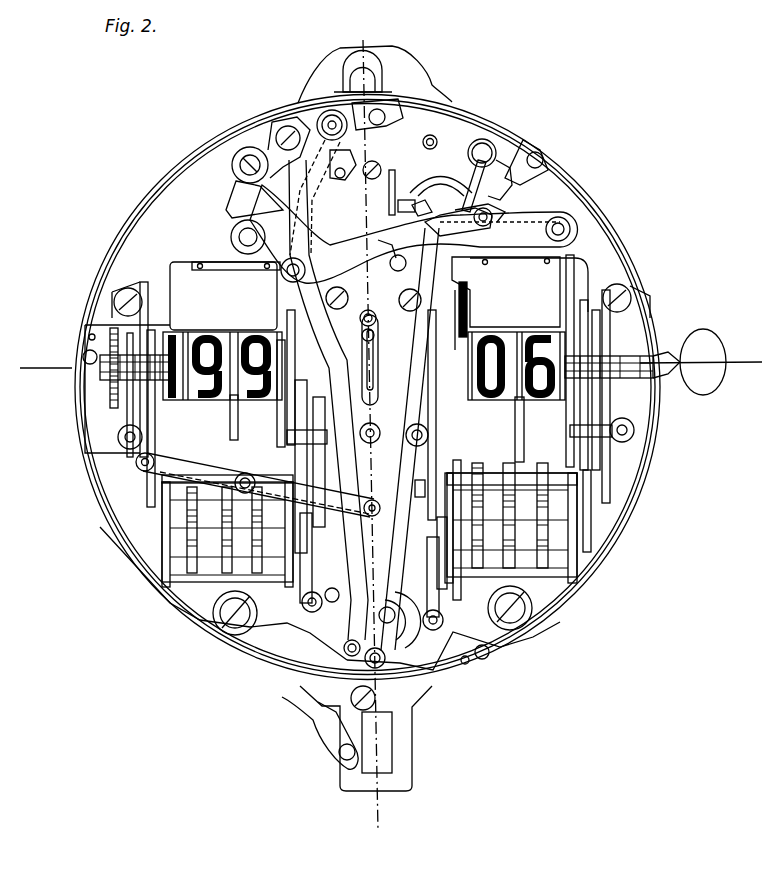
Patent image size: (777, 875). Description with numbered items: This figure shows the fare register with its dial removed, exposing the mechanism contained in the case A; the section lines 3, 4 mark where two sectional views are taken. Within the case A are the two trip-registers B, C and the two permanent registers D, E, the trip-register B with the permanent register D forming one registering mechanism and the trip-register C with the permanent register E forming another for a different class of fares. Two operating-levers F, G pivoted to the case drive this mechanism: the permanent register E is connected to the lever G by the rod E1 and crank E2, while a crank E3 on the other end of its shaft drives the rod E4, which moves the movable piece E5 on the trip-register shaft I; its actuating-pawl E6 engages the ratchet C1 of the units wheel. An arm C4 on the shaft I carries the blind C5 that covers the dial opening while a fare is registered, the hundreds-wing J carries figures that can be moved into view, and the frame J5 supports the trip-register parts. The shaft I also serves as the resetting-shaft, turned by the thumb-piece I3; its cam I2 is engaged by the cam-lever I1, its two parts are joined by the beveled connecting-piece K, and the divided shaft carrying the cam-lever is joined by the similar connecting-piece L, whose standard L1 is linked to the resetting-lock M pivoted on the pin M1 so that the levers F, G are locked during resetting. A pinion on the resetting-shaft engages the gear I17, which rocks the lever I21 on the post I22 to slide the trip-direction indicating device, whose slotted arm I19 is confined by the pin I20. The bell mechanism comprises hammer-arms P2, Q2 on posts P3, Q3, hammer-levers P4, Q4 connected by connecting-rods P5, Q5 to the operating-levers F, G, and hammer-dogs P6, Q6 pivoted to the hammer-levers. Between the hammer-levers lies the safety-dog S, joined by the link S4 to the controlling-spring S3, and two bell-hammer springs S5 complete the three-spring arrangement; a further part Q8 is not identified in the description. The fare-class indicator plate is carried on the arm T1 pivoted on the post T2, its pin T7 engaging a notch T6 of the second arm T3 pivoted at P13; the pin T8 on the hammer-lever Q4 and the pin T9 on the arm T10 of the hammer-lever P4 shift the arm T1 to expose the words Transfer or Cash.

The case A is at (634, 252).
The trip-register B is at (112, 427).
The trip-register C is at (540, 348).
The ratchet C1 is at (575, 290).
The blind-arm C4 is at (213, 265).
The blind C5 is at (183, 268).
The permanent register D is at (168, 562).
The permanent register E is at (578, 560).
The rod E1 is at (461, 600).
The crank E2 is at (470, 583).
The crank E3 is at (591, 538).
The rod E4 is at (612, 468).
The movable piece E5 is at (290, 328).
The actuating-pawl E6 is at (236, 396).
The operating-lever F is at (283, 624).
The operating-lever G is at (467, 630).
The resetting-shaft I is at (630, 377).
The cam-lever I1 is at (247, 483).
The cam I2 is at (333, 625).
The thumb-piece I3 is at (710, 386).
The gear I17 is at (110, 392).
The slotted arm I19 is at (392, 457).
The pin I20 is at (374, 330).
The lever I21 is at (143, 461).
The post I22 is at (247, 497).
The hundreds-wing J is at (175, 425).
The frame J5 is at (126, 294).
The connecting-piece K is at (376, 388).
The connecting-piece L is at (430, 514).
The standard L1 is at (313, 450).
The resetting-lock M is at (405, 632).
The pin M1 is at (385, 662).
The hammer-arm P2 is at (226, 200).
The post P3 is at (247, 158).
The hammer-lever P4 is at (281, 128).
The connecting-rod P5 is at (290, 399).
The hammer-dog P6 is at (352, 160).
The pivot P13 is at (332, 110).
The hammer-arm Q2 is at (472, 185).
The post Q3 is at (500, 198).
The hammer-lever Q4 is at (483, 139).
The connecting-rod Q5 is at (420, 396).
The hammer-dog Q6 is at (440, 190).
The link Q8 is at (415, 205).
The safety-dog S is at (392, 205).
The controlling-spring S3 is at (367, 312).
The link S4 is at (404, 205).
The bell-hammer spring S5 is at (492, 207).
The arm T1 is at (538, 224).
The post T2 is at (563, 224).
The second arm T3 is at (290, 223).
The notch T6 is at (327, 116).
The pin T7 is at (284, 276).
The pin T8 is at (380, 252).
The pin T9 is at (380, 110).
The arm T10 is at (388, 127).
The section line 3 is at (400, 820).
The section line 4 is at (28, 352).